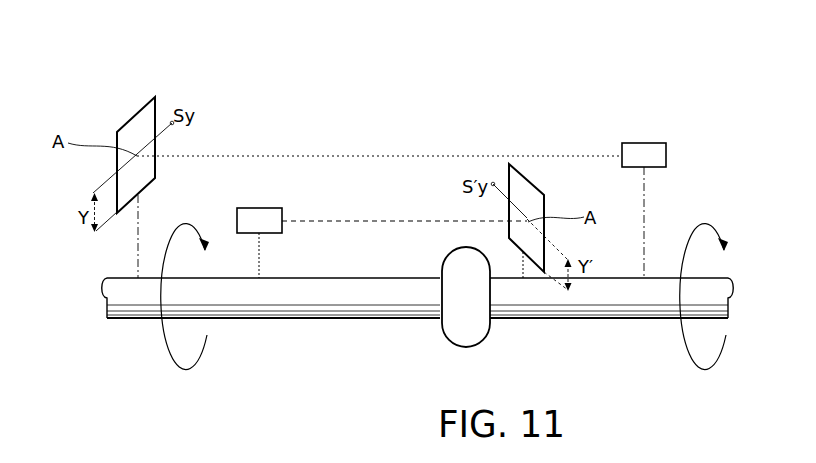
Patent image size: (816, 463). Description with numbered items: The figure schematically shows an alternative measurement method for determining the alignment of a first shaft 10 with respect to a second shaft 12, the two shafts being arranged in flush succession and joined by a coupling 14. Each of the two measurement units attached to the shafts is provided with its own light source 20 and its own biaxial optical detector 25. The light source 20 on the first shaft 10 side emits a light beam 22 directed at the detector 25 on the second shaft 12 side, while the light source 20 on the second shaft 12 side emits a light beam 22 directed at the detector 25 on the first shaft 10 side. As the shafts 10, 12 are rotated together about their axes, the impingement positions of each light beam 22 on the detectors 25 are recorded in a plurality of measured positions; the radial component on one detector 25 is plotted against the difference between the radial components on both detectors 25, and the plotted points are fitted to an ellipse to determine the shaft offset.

The first shaft 10 is at (330, 293).
The second shaft 12 is at (603, 297).
The coupling 14 is at (446, 338).
The light source 20 is at (255, 215).
The light beam 22 is at (323, 156).
The biaxial optical detector 25 is at (140, 120).